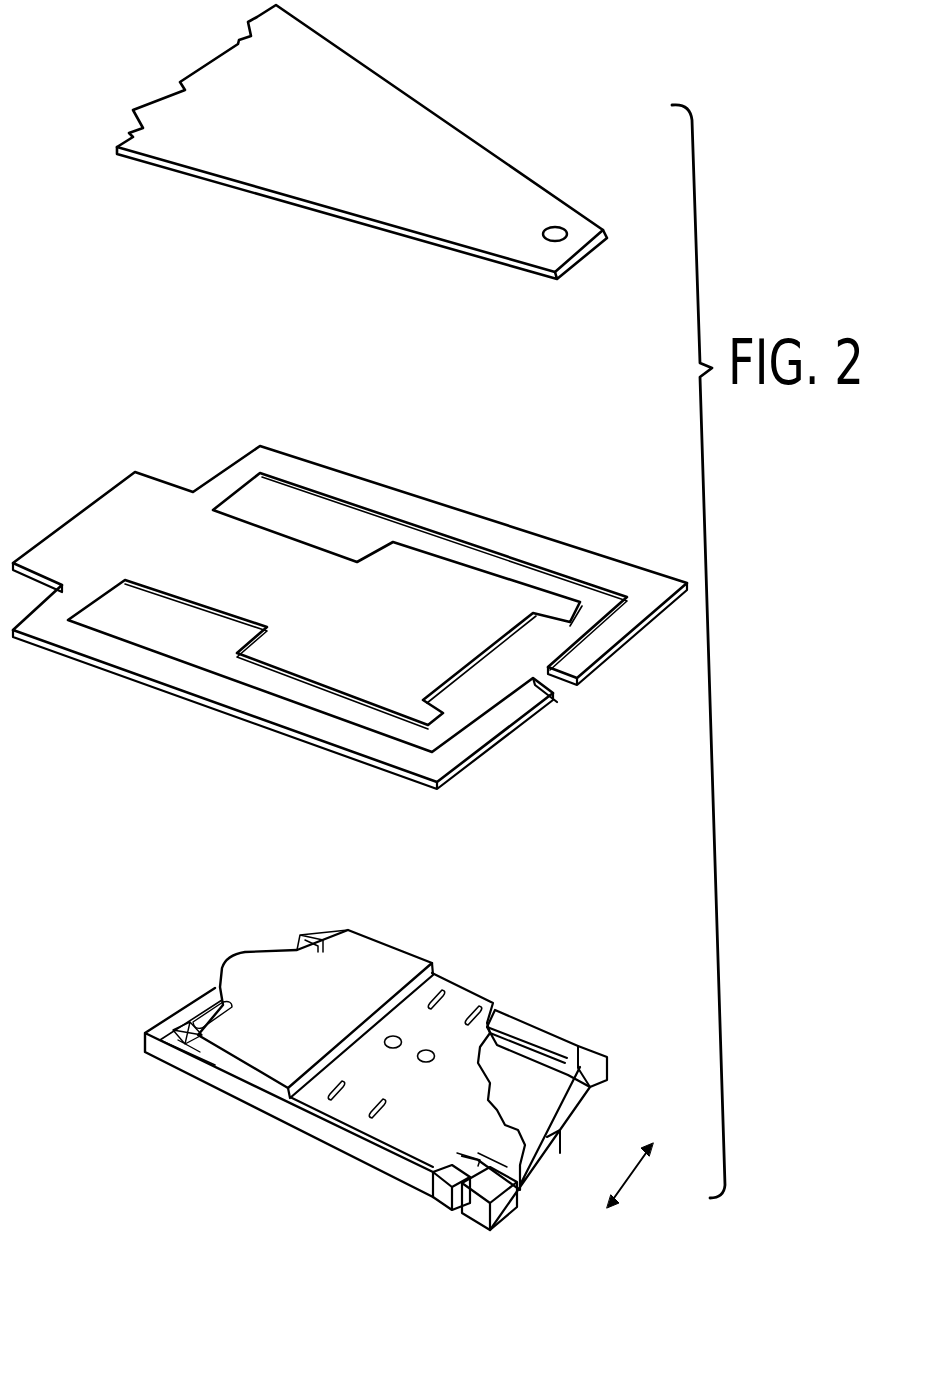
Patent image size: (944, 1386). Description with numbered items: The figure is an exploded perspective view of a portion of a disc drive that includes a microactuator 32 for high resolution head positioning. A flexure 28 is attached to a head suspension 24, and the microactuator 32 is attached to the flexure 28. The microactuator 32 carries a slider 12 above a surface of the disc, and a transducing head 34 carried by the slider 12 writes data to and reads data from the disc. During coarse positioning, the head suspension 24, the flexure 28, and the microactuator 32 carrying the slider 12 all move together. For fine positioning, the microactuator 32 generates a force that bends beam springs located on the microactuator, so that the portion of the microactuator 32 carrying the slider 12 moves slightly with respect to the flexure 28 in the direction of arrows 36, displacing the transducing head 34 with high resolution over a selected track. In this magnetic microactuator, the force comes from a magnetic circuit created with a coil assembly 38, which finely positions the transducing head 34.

The slider 12 is at (557, 1093).
The head suspension 24 is at (440, 130).
The flexure 28 is at (452, 506).
The microactuator 32 is at (173, 1013).
The transducing head 34 is at (548, 1145).
The arrows 36 is at (628, 1178).
The coil assembly 38 is at (277, 1055).